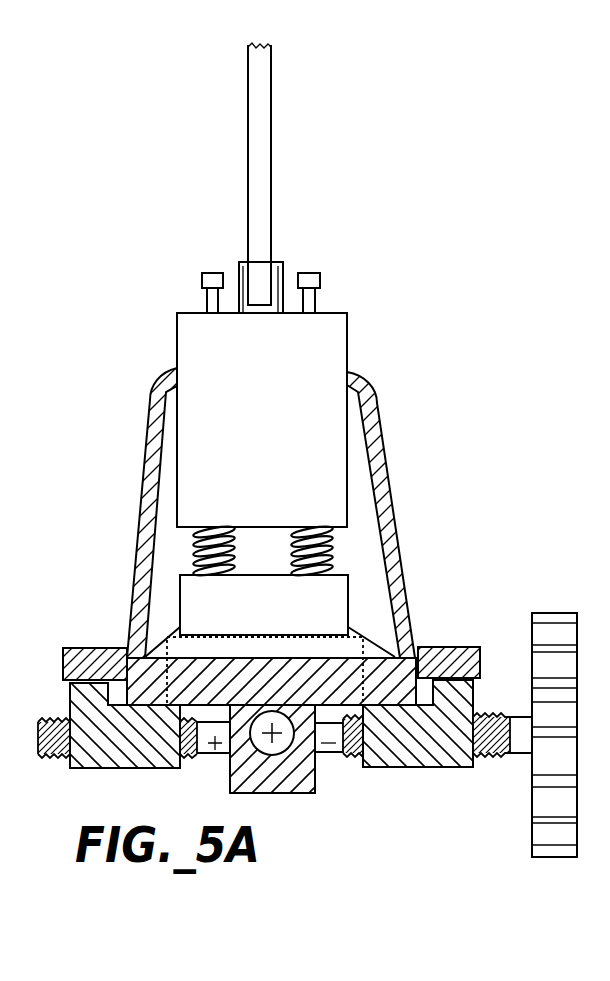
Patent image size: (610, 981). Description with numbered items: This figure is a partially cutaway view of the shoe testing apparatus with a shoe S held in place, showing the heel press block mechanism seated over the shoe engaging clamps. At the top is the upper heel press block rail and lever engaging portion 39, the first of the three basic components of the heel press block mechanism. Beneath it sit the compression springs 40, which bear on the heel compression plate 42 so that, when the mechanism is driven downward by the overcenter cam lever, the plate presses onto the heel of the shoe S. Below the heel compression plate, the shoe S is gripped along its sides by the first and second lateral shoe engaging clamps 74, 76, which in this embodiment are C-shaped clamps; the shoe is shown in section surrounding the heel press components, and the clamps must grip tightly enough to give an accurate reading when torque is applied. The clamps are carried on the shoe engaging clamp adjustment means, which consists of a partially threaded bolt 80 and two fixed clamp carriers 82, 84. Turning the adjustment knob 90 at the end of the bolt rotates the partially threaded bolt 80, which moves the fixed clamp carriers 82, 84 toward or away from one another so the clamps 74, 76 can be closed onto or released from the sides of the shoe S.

The upper heel press block rail and lever engaging portion 39 is at (279, 446).
The compression springs 40 is at (193, 555).
The heel compression plate 42 is at (279, 619).
The shoe S is at (377, 480).
The first lateral shoe engaging clamp 74 is at (452, 648).
The second lateral shoe engaging clamp 76 is at (102, 650).
The partially threaded bolt 80 is at (215, 752).
The fixed clamp carrier 82 is at (400, 758).
The fixed clamp carrier 84 is at (137, 765).
The adjustment knob 90 is at (542, 803).